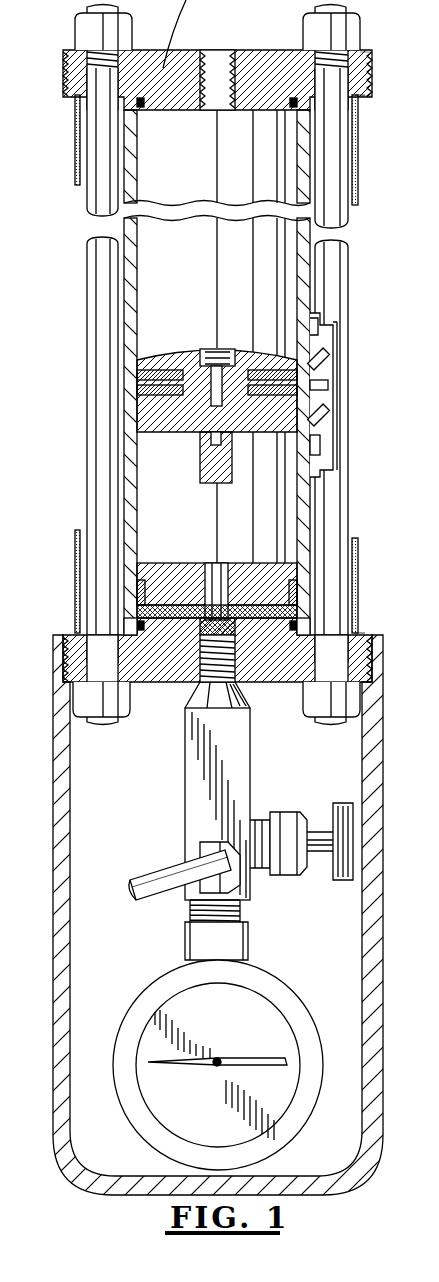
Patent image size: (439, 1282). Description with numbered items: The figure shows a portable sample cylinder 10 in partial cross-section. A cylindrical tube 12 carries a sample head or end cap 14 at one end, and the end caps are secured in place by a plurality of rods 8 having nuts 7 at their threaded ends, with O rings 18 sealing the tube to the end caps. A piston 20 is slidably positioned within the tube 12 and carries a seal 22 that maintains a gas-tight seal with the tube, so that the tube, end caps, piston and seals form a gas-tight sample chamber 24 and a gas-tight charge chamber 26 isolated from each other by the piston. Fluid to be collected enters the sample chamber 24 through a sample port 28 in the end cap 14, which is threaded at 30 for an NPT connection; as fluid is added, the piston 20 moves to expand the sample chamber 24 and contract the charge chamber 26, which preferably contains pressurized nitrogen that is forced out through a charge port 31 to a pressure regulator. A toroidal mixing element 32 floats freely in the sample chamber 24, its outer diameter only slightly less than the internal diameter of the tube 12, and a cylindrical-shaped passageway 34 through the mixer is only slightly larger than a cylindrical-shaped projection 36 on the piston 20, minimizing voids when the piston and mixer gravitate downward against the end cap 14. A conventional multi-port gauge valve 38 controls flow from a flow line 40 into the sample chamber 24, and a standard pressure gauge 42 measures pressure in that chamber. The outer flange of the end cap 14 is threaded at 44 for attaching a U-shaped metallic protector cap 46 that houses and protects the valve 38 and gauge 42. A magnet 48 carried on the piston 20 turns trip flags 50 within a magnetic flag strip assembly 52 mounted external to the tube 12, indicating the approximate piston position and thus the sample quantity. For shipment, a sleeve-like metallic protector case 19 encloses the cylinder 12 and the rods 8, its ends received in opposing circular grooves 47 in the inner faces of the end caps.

The nuts 7 is at (110, 705).
The rods 8 is at (95, 470).
The portable sample cylinder 10 is at (368, 383).
The cylindrical tube 12 is at (128, 308).
The sample head or end cap 14 is at (165, 668).
The O rings 18 is at (137, 102).
The protector case 19 is at (360, 175).
The piston 20 is at (298, 405).
The seal 22 is at (137, 410).
The sample chamber 24 is at (195, 533).
The charge chamber 26 is at (247, 273).
The sample port 28 is at (137, 600).
The threads 30 is at (235, 648).
The charge port 31 is at (219, 58).
The toroidal mixing element 32 is at (278, 570).
The cylindrical-shaped passageway 34 is at (210, 590).
The cylindrical-shaped projection 36 is at (232, 470).
The multi-port gauge valve 38 is at (185, 832).
The flow line 40 is at (160, 862).
The pressure gauge 42 is at (158, 985).
The threads 44 is at (370, 70).
The protector cap 46 is at (65, 803).
The circular grooves 47 is at (362, 92).
The magnet 48 is at (136, 373).
The trip flags 50 is at (318, 325).
The magnetic flag strip assembly 52 is at (330, 358).